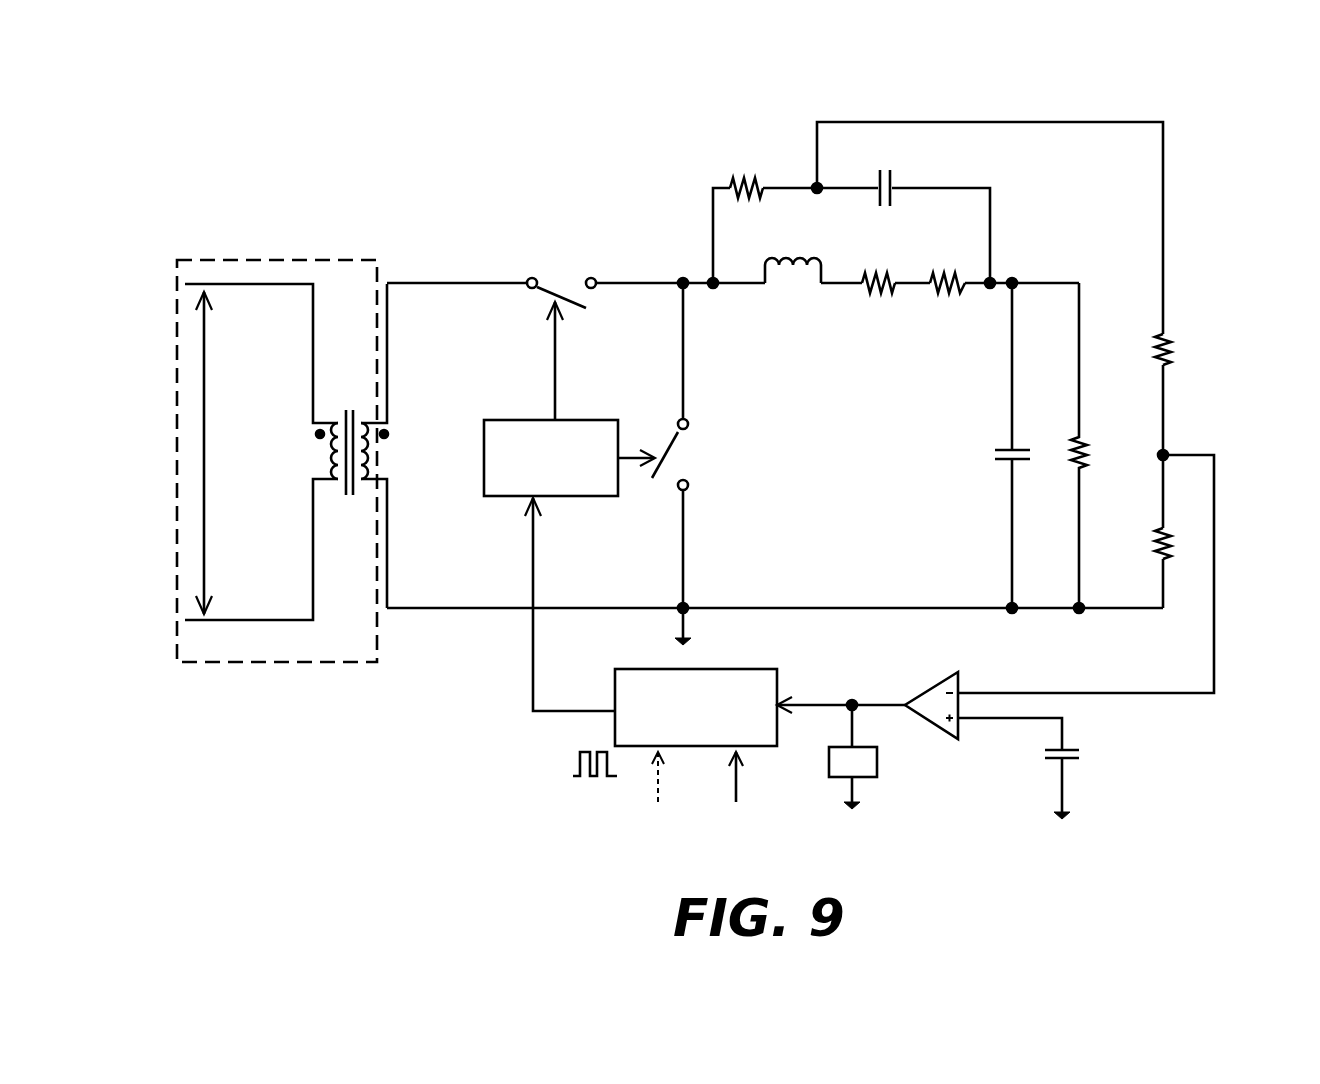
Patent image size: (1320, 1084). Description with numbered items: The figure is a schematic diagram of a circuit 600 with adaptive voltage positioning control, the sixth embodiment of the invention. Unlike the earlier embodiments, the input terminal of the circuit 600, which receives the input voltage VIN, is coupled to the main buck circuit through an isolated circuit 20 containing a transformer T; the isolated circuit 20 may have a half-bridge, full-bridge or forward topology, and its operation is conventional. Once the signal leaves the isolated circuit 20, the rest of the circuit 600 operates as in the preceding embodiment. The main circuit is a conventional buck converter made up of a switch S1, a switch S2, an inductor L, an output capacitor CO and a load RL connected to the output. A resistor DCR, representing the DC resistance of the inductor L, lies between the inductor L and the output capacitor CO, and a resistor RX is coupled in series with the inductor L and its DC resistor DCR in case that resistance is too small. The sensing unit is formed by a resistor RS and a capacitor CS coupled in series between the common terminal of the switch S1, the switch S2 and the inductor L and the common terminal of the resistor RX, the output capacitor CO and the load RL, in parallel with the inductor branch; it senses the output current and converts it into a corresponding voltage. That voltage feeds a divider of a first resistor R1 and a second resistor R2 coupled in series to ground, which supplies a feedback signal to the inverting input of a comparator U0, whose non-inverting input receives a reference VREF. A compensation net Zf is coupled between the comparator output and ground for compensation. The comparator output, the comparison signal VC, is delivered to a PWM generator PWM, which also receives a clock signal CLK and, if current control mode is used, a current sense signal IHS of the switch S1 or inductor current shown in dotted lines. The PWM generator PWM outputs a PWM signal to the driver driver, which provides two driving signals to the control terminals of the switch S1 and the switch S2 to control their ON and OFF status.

The circuit with AVP control 600 is at (275, 190).
The isolated circuit 20 is at (323, 662).
The input voltage VIN is at (201, 453).
The transformer T is at (299, 452).
The switch S1 is at (561, 278).
The switch S2 is at (692, 454).
The element driver is at (569, 399).
The resistor RS is at (747, 176).
The capacitor CS is at (900, 181).
The inductor L is at (793, 293).
The DC resistor DCR is at (878, 303).
The resistor RX is at (947, 301).
The output capacitor CO is at (993, 445).
The load RL is at (1097, 445).
The first resistor R1 is at (1180, 353).
The second resistor R2 is at (1180, 547).
The comparator U0 is at (925, 701).
The reference VREF is at (1089, 764).
The comparison signal VC is at (853, 691).
The compensation net Zf is at (885, 766).
The PWM generator PWM is at (696, 707).
The current sense signal IHS is at (663, 794).
The CLK signal CLK is at (729, 794).